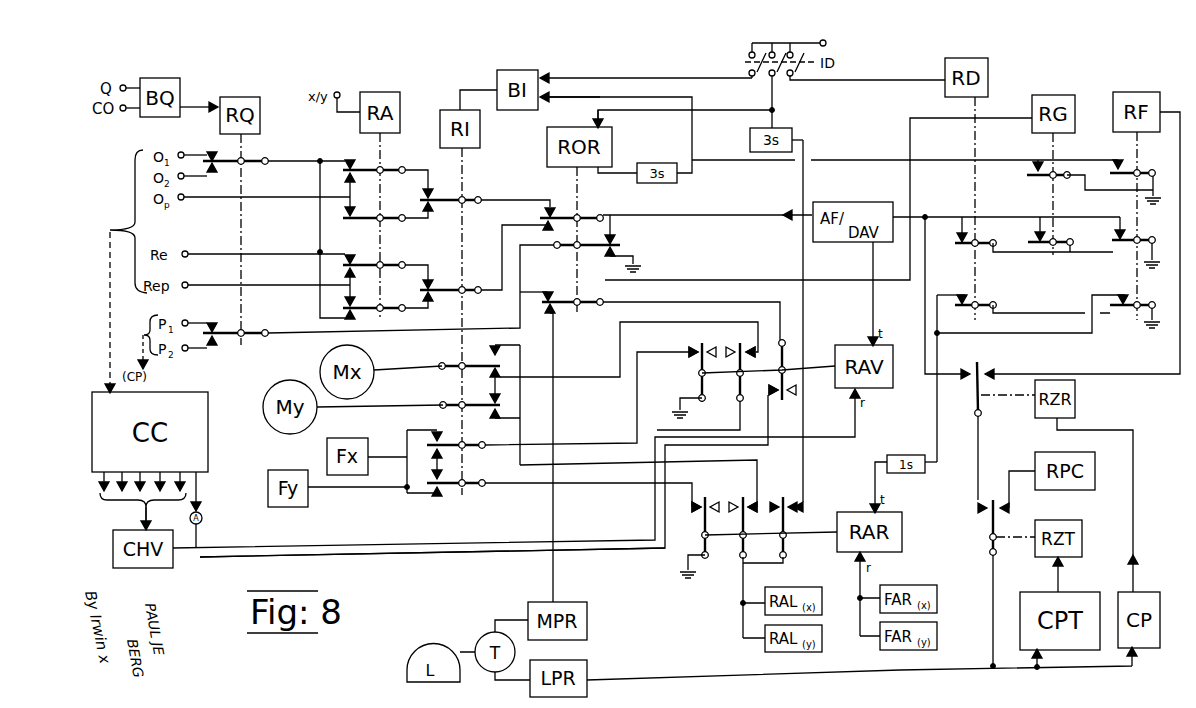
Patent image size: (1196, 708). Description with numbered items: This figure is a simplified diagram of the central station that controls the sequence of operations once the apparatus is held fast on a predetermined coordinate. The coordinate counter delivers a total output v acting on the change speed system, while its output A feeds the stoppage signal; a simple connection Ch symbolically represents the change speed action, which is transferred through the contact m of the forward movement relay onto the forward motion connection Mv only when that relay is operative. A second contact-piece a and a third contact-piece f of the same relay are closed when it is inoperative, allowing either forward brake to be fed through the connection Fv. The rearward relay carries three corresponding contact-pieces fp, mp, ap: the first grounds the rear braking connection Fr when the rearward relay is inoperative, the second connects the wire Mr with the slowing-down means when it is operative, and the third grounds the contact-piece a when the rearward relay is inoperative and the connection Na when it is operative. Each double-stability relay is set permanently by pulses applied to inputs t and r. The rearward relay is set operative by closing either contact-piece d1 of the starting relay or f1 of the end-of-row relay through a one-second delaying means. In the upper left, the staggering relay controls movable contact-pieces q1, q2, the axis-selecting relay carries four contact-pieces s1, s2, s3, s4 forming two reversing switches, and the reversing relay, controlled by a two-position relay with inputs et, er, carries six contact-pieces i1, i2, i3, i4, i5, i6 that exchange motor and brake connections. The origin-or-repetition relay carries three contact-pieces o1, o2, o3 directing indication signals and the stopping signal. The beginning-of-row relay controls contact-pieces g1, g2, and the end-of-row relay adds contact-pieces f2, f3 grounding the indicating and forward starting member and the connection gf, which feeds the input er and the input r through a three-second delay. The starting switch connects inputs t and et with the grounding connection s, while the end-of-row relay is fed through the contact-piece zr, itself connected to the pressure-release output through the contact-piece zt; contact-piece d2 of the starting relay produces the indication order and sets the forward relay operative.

The movable contact-piece q1 is at (262, 158).
The movable contact-piece q2 is at (262, 330).
The contact-piece s1 is at (398, 166).
The contact-piece s2 is at (398, 214).
The contact-piece s3 is at (398, 261).
The contact-piece s4 is at (398, 304).
The contact-piece i1 is at (476, 197).
The contact-piece i2 is at (476, 287).
The contact-piece i3 is at (446, 356).
The contact-piece i4 is at (452, 396).
The contact-piece i5 is at (480, 442).
The contact-piece i6 is at (480, 480).
The contact-piece o1 is at (580, 210).
The contact-piece o2 is at (586, 258).
The contact-piece o3 is at (572, 318).
The contact-piece d1 is at (958, 309).
The contact-piece d2 is at (958, 247).
The contact-piece g1 is at (1045, 247).
The contact-piece g2 is at (1033, 179).
The contact-piece f1 is at (1130, 309).
The contact-piece f2 is at (1130, 244).
The contact-piece f3 is at (1128, 177).
The contact-piece f is at (694, 371).
The contact m is at (748, 340).
The contact-piece a is at (782, 378).
The movable contact-piece fp is at (699, 529).
The movable contact-piece mp is at (747, 558).
The movable contact-piece ap is at (770, 519).
The contact-piece zr is at (977, 400).
The contact-piece zt is at (988, 537).
The connection Na is at (803, 326).
The connection gf is at (835, 162).
The forward motion connection Mv is at (608, 377).
The rearward motion connection Mr is at (592, 463).
The front braking connection Fv is at (607, 446).
The rear braking connection Fr is at (610, 484).
The connection Ch is at (420, 547).
The output A is at (446, 556).
The input et is at (646, 73).
The input er is at (570, 89).
The grounding connection s is at (793, 38).
The input t is at (591, 116).
The input r is at (610, 177).
The total output v is at (153, 516).